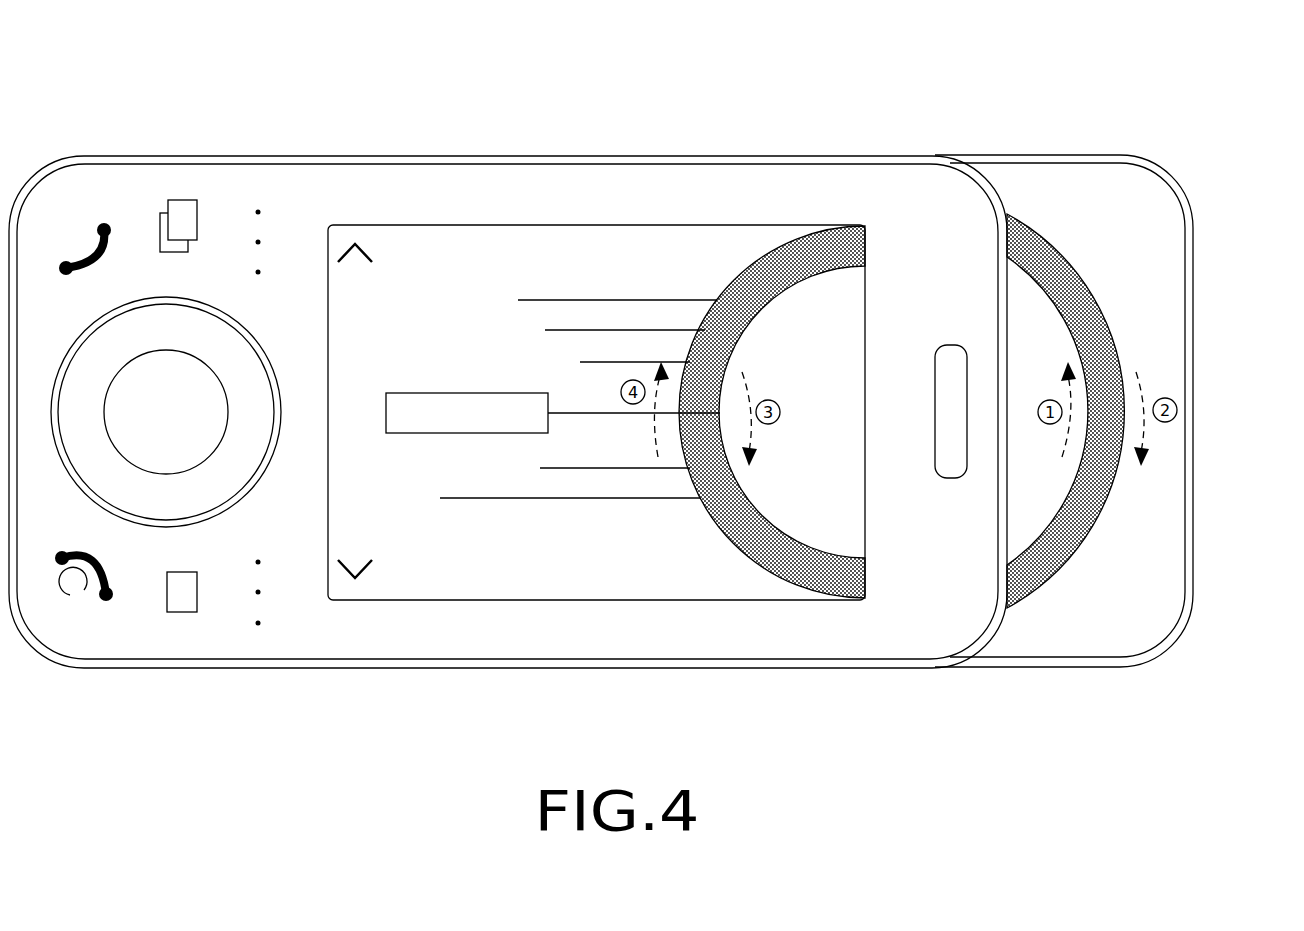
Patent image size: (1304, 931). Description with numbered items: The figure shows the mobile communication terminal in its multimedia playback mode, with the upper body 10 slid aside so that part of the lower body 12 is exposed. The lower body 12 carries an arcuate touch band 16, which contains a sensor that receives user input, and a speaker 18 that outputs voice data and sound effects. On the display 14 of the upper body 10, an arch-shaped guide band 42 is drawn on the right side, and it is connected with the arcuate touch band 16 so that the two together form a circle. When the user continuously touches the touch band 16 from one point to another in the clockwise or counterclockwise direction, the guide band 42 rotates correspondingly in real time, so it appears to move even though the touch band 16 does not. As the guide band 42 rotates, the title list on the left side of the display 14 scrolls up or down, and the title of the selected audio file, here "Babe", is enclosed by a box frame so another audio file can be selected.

The upper body 10 is at (292, 233).
The lower body 12 is at (1158, 334).
The display 14 is at (629, 250).
The touch band 16 is at (1070, 287).
The speaker 18 is at (950, 345).
The guide band 42 is at (792, 255).